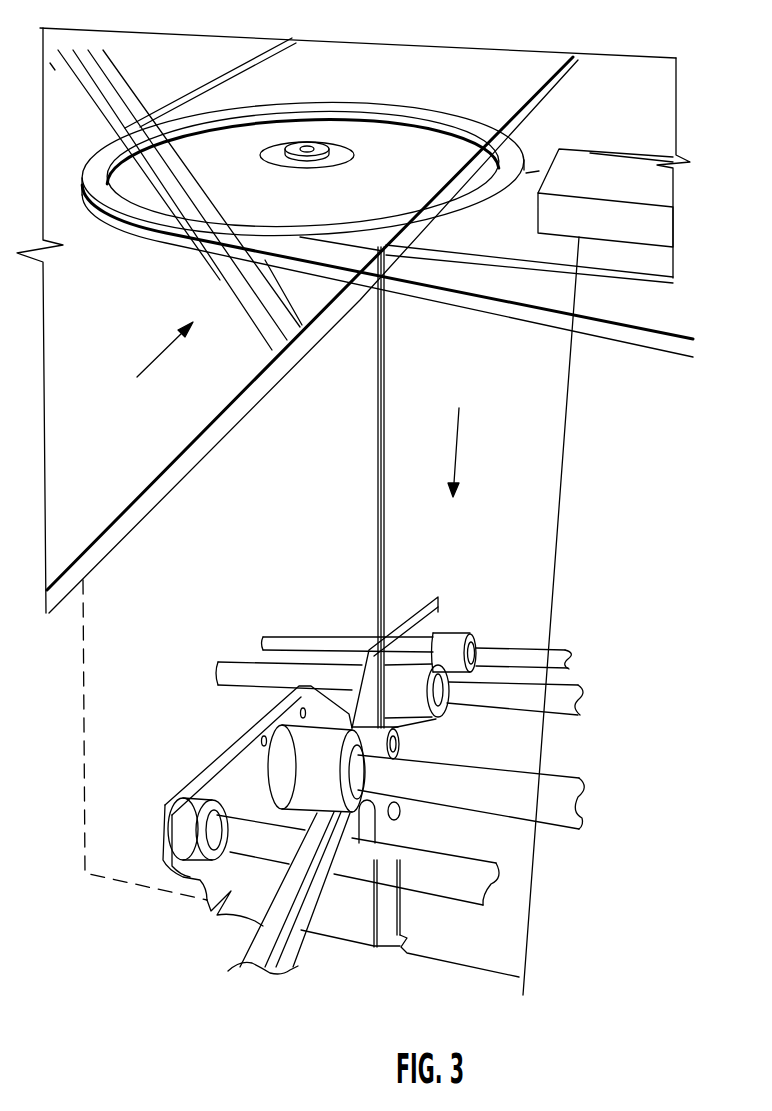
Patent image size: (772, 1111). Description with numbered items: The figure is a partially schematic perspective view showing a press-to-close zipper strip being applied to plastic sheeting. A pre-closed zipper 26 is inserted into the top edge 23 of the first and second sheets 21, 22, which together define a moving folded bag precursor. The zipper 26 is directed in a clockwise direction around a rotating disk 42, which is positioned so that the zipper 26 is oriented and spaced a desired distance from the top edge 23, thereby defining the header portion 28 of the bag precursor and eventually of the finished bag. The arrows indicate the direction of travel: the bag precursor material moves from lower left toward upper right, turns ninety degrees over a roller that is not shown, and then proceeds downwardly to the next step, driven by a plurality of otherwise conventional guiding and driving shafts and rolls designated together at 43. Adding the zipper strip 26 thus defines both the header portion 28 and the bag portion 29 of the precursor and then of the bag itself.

The first sheet 21 is at (97, 386).
The second sheet 22 is at (143, 518).
The top edge 23 is at (257, 410).
The zipper 26 is at (262, 60).
The header portion 28 is at (490, 98).
The bag portion 29 is at (337, 563).
The rotating disk 42 is at (363, 208).
The guiding and driving shafts and rolls 43 is at (629, 722).